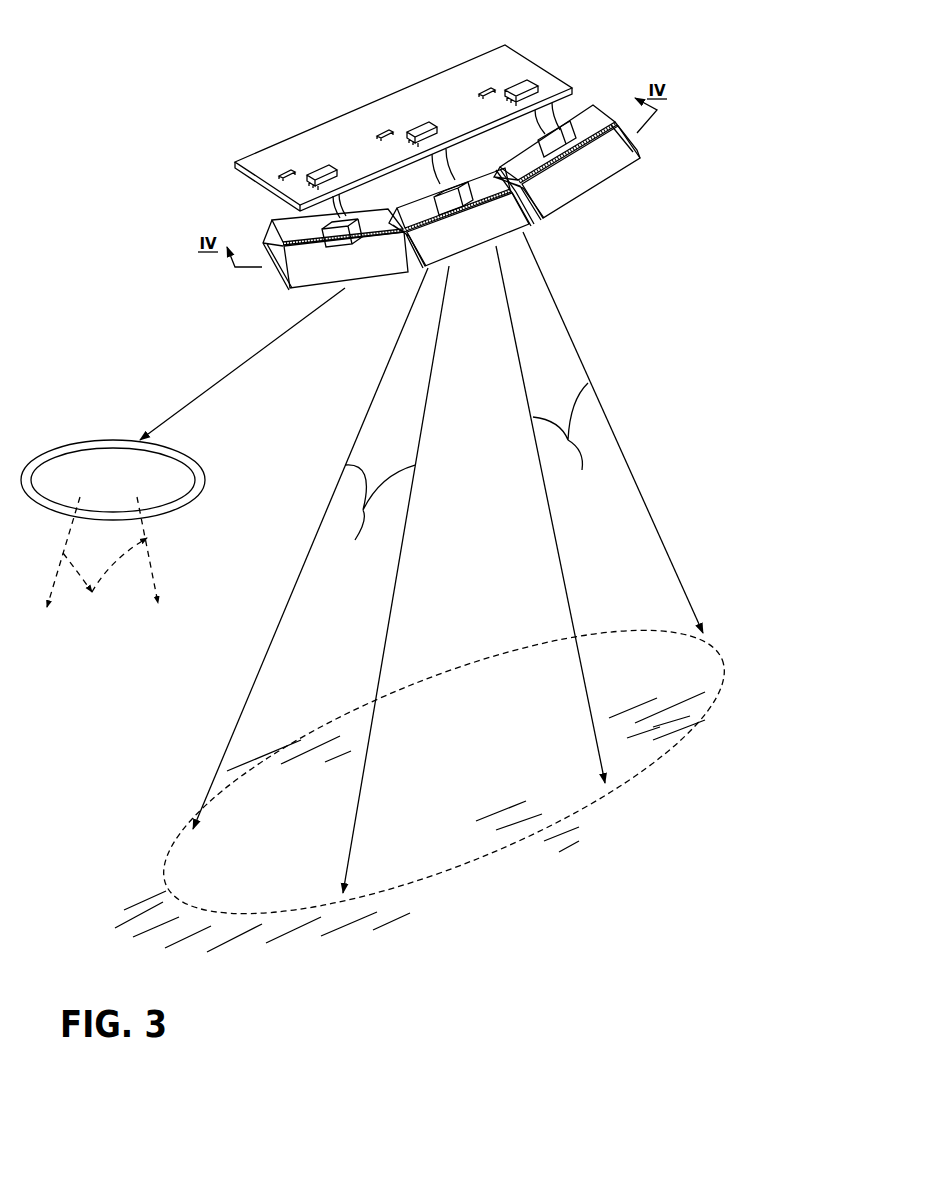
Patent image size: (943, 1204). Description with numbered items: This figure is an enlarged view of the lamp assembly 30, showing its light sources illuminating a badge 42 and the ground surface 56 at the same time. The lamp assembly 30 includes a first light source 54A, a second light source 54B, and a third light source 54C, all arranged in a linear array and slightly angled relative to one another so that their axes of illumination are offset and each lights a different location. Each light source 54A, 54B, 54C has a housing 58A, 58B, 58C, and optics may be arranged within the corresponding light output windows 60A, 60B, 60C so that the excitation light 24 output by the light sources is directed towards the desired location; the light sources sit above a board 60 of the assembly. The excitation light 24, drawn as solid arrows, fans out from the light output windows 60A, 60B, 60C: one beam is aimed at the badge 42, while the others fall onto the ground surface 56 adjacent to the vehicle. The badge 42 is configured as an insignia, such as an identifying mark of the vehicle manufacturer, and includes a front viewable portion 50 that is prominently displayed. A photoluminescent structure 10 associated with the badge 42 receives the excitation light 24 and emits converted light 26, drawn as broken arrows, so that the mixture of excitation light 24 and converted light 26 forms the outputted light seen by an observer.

The photoluminescent structure 10 is at (177, 492).
The excitation light 24 is at (233, 360).
The converted light 26 is at (102, 561).
The lamp assembly 30 is at (700, 75).
The badge 42 is at (108, 438).
The front viewable portion 50 is at (53, 475).
The first light source 54A is at (352, 215).
The second light source 54B is at (459, 193).
The third light source 54C is at (560, 137).
The ground surface 56 is at (320, 961).
The housing 58A is at (372, 207).
The housing 58B is at (470, 207).
The housing 58C is at (602, 113).
The circuit board 60 is at (258, 158).
The light output window 60A is at (342, 288).
The light output window 60B is at (508, 243).
The light output window 60C is at (607, 183).